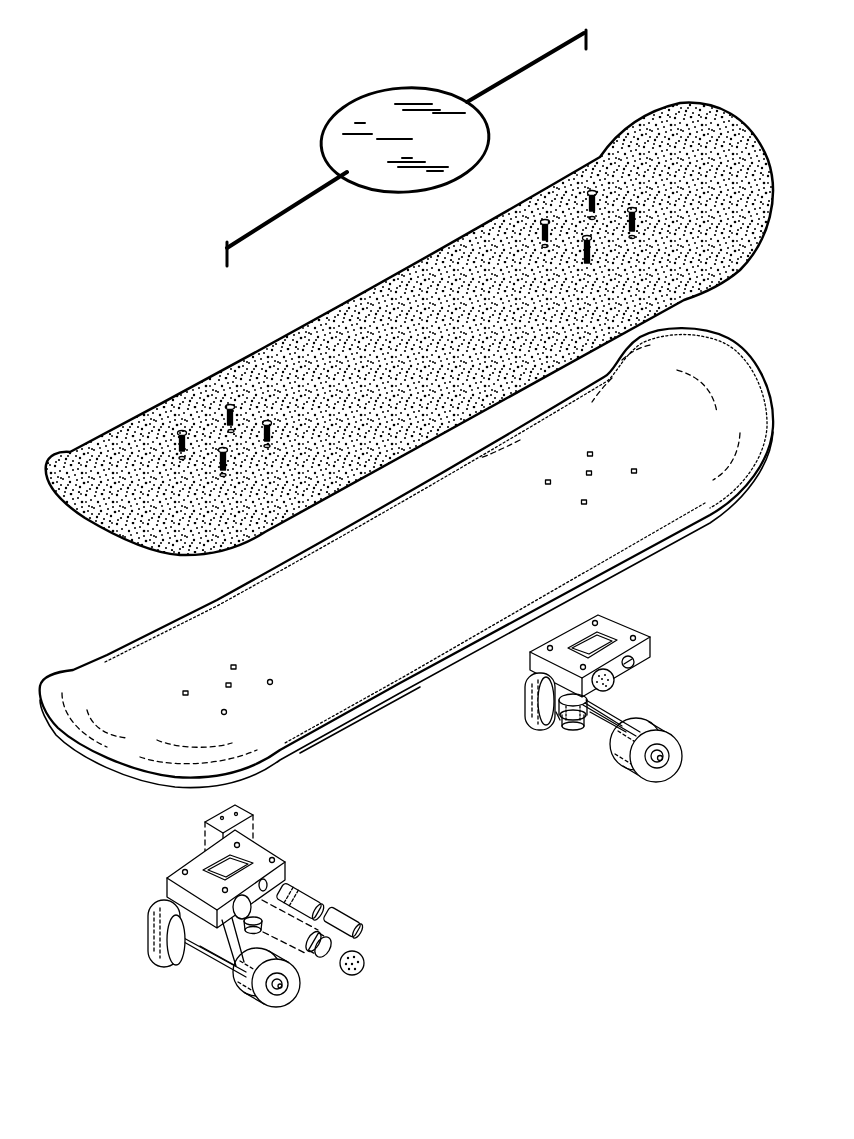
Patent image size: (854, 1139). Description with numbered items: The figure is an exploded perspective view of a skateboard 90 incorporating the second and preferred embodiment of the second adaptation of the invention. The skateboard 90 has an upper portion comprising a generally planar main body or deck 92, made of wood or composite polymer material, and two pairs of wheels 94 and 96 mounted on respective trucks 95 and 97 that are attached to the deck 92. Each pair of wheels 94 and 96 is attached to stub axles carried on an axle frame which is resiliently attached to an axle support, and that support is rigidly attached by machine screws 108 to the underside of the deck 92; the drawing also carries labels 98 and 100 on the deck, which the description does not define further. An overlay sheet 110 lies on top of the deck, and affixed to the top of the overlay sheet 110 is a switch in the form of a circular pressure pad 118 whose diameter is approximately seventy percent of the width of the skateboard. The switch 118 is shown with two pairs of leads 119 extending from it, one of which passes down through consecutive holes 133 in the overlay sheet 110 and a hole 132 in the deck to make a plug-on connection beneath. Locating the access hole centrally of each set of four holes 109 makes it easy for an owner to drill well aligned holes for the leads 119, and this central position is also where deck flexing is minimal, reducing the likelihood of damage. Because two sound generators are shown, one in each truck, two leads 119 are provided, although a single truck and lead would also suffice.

The skateboard 90 is at (146, 150).
The deck 92 is at (108, 654).
The wheels 94 is at (527, 713).
The truck 95 is at (626, 628).
The wheels 96 is at (147, 948).
The truck 97 is at (292, 863).
The deck underside 98 is at (345, 745).
The deck top surface 100 is at (167, 660).
The machine screws 108 is at (228, 406).
The holes 109 is at (595, 452).
The overlay sheet 110 is at (699, 102).
The circular pressure pad 118 is at (367, 103).
The leads 119 is at (590, 38).
The hole 132 is at (588, 473).
The holes 133 is at (586, 234).